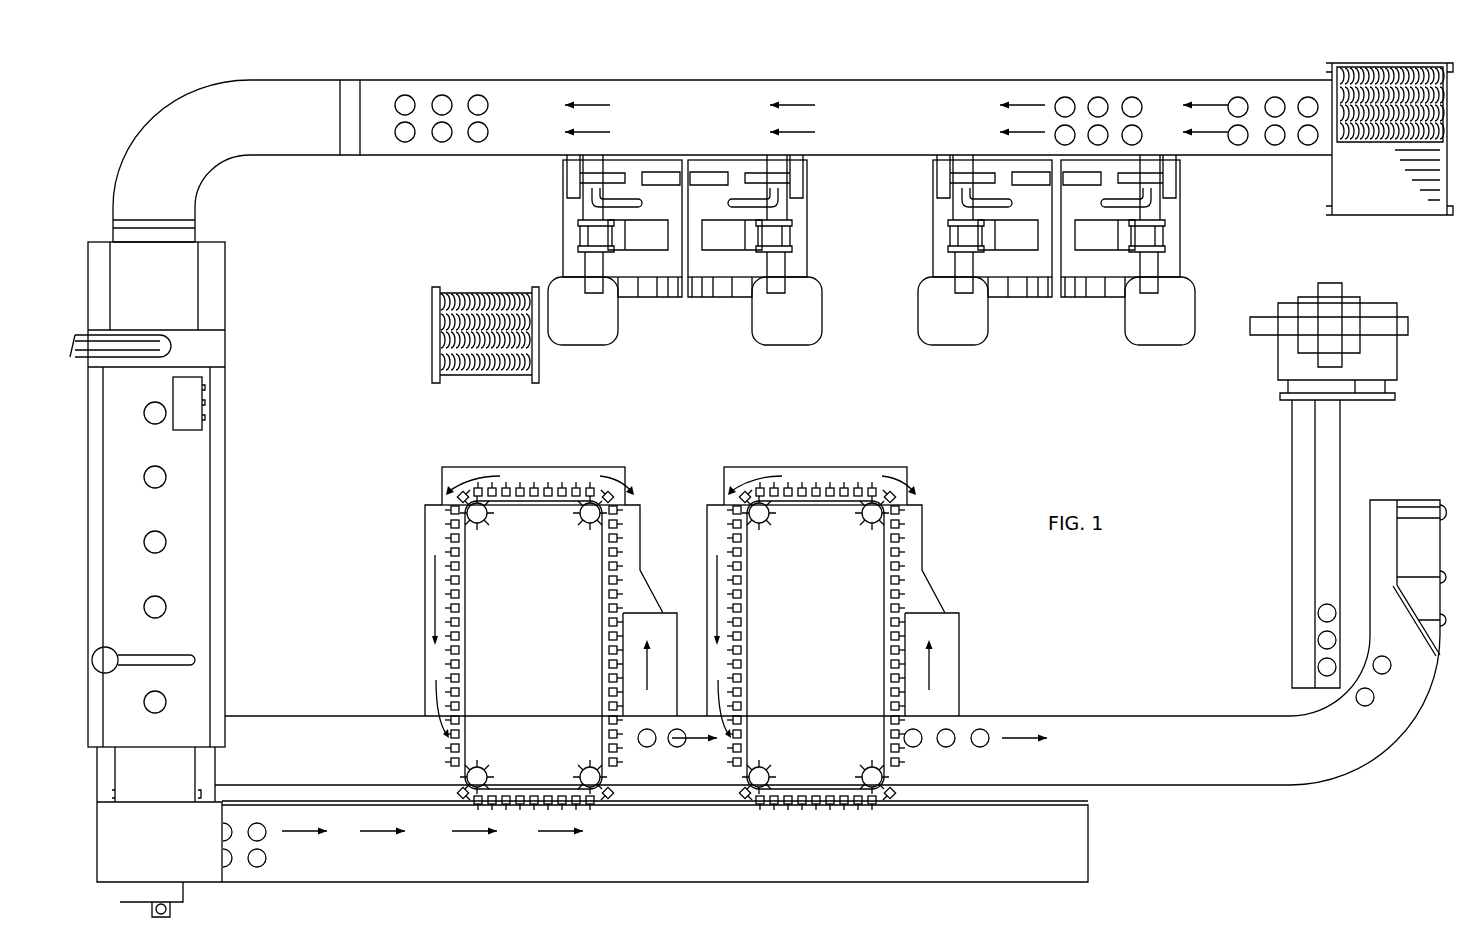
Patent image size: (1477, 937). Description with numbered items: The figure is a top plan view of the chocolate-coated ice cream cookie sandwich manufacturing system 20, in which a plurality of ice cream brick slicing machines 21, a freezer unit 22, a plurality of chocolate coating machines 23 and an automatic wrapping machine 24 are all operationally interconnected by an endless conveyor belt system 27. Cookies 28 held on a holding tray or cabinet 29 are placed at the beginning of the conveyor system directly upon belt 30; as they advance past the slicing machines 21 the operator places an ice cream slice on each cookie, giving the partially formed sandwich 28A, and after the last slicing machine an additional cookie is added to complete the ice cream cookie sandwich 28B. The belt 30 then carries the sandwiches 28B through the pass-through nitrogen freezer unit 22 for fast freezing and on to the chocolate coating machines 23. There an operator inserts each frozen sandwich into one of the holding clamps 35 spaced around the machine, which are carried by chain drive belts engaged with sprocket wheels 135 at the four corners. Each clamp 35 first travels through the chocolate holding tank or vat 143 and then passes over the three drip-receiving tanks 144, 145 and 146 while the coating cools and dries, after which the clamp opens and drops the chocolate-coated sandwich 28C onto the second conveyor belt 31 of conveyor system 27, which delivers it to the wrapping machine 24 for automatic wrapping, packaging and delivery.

The chocolate-coated ice cream cookie sandwich manufacturing system 20 is at (1300, 787).
The ice cream brick slicing machine 21 is at (708, 299).
The freezer unit 22 is at (225, 472).
The chocolate coating machine 23 is at (678, 618).
The automatic wrapping machine 24 is at (1294, 446).
The endless conveyor belt system 27 is at (752, 414).
The cookie 28 is at (1302, 96).
The partially formed ice cream cookie sandwich 28A is at (1070, 95).
The ice cream cookie sandwich 28B is at (408, 95).
The chocolate-coated ice cream cookie sandwich 28C is at (680, 748).
The holding tray or cabinet 29 is at (929, 200).
The conveyor belt 30 is at (825, 80).
The second conveyor belt 31 is at (358, 716).
The holding clamp 35 is at (522, 500).
The upper sprocket wheel 135 is at (482, 528).
The chocolate holding tank or vat 143 is at (655, 618).
The drip-receiving tank 144 is at (640, 505).
The drip-receiving tank 145 is at (518, 467).
The drip-receiving tank 146 is at (425, 652).